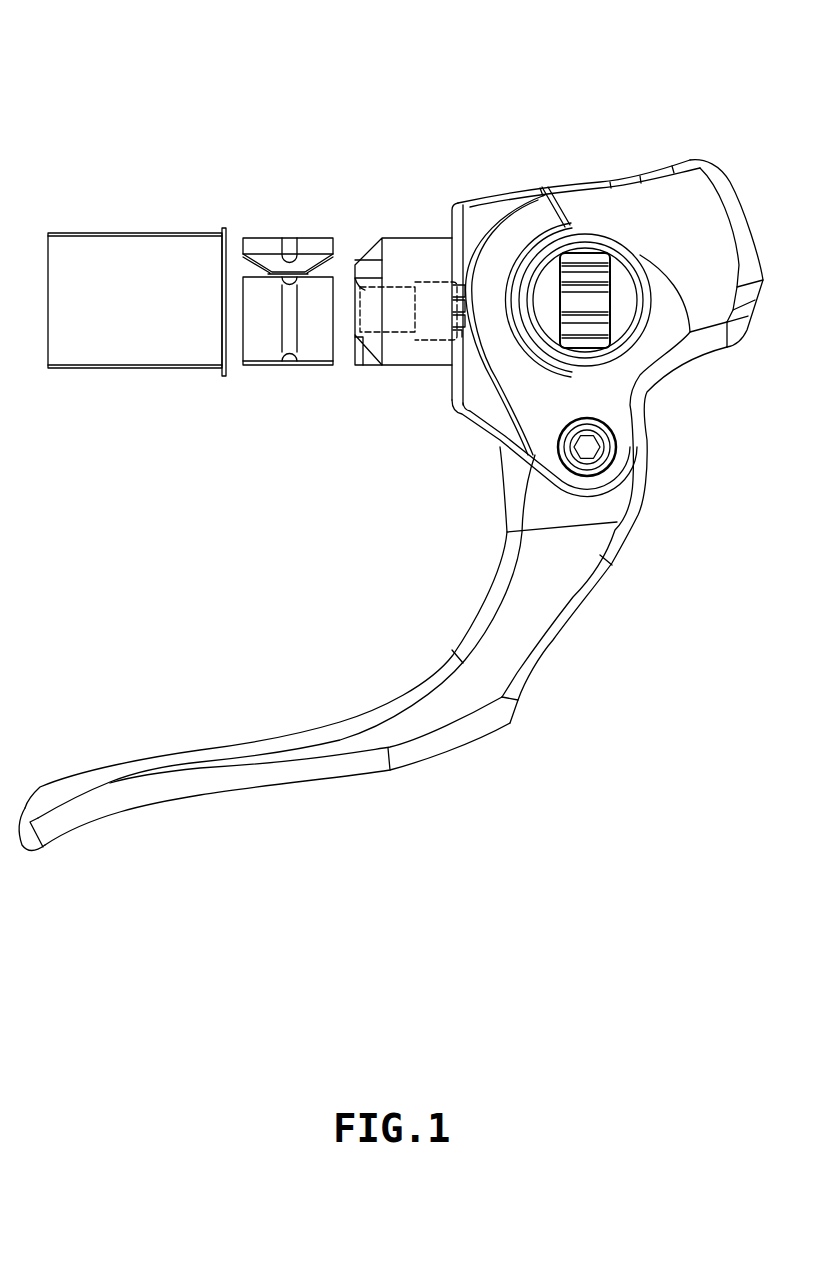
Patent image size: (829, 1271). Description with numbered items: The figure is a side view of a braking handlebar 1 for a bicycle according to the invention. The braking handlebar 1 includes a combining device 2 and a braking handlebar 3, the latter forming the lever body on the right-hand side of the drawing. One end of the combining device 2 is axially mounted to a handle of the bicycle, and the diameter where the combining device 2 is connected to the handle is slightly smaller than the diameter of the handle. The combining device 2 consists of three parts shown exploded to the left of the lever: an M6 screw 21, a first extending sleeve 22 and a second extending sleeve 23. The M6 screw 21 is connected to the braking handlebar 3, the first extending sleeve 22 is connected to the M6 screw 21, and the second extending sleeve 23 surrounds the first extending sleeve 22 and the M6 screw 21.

The braking handlebar 1 is at (138, 97).
The combining device 2 is at (210, 170).
The M6 screw 21 is at (405, 248).
The first extending sleeve 22 is at (307, 243).
The second extending sleeve 23 is at (170, 242).
The braking handlebar 3 is at (490, 428).